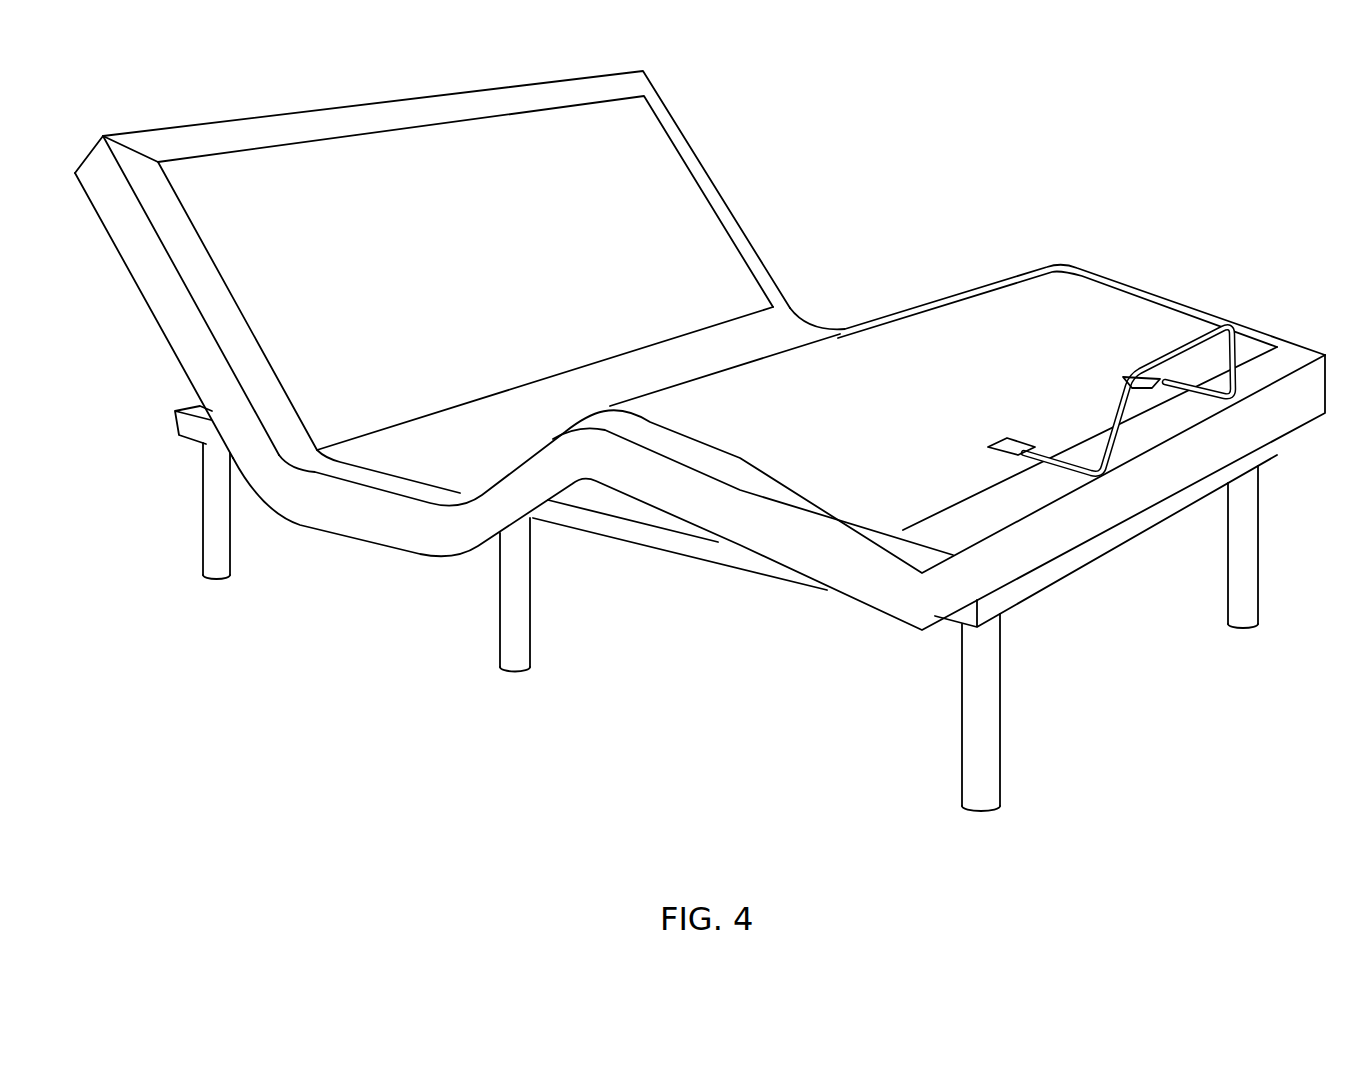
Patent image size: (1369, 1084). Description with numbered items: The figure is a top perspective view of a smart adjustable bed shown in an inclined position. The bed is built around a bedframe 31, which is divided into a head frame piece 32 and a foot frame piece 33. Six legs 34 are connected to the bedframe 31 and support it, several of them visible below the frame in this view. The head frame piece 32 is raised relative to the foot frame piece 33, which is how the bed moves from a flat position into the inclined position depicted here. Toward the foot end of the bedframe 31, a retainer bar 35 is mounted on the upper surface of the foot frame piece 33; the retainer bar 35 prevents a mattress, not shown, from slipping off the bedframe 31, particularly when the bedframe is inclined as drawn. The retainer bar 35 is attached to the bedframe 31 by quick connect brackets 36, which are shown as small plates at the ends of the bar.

The bedframe 31 is at (701, 441).
The head frame piece 32 is at (700, 150).
The foot frame piece 33 is at (1152, 293).
The leg 34 is at (962, 770).
The retainer bar 35 is at (1250, 335).
The quick connect bracket 36 is at (1010, 452).